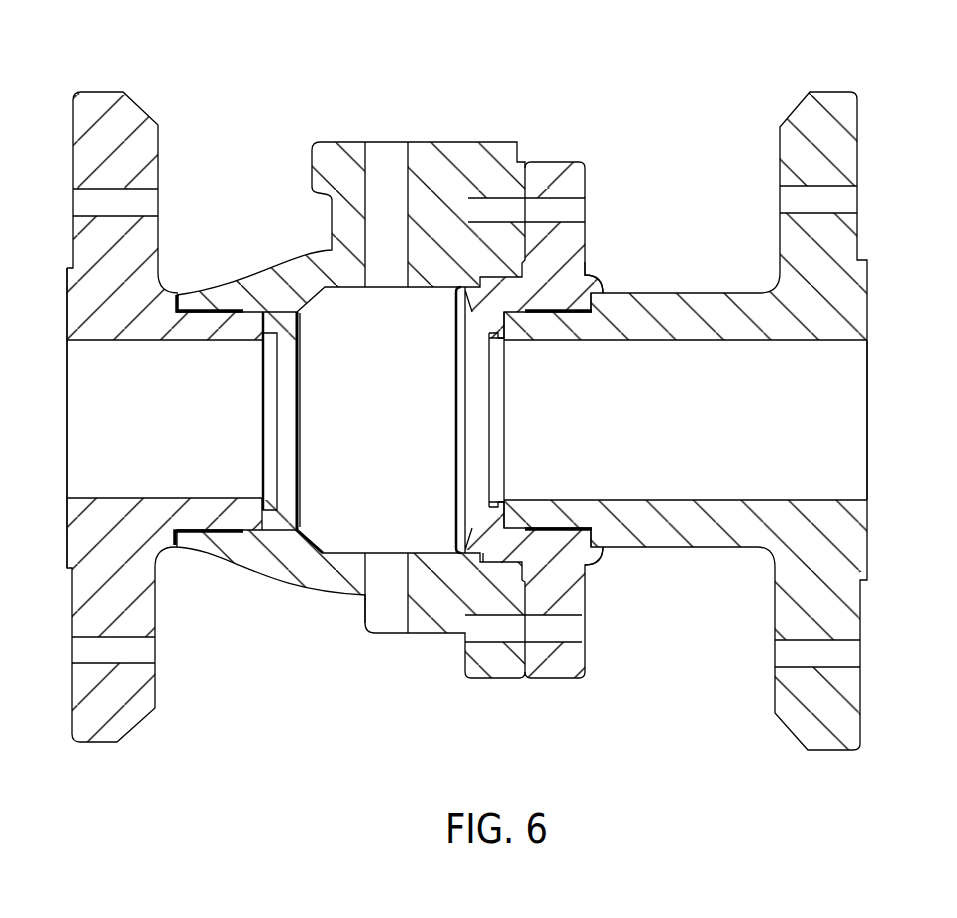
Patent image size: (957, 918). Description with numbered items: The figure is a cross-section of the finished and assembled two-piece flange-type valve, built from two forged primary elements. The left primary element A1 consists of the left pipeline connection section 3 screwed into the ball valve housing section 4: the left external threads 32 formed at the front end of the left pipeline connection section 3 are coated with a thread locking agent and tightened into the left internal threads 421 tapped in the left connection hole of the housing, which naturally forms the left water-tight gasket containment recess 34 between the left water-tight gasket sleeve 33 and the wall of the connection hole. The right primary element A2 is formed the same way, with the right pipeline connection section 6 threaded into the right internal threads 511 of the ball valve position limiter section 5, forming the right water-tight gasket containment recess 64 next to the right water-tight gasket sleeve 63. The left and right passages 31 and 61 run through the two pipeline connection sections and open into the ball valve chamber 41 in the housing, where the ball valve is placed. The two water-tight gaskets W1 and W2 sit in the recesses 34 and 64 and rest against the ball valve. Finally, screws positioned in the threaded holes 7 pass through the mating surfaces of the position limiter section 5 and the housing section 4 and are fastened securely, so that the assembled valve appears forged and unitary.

The left pipeline connection section 3 is at (93, 91).
The ball valve housing section 4 is at (297, 253).
The ball valve position limiter section 5 is at (570, 163).
The right pipeline connection section 6 is at (828, 90).
The threaded holes 7 is at (87, 203).
The left passage 31 is at (100, 445).
The left external threads 32 is at (188, 314).
The left water-tight gasket sleeve 33 is at (267, 509).
The left water-tight gasket containment recess 34 is at (262, 522).
The ball valve chamber 41 is at (588, 308).
The right passage 61 is at (837, 370).
The right water-tight gasket sleeve 63 is at (483, 513).
The right water-tight gasket containment recess 64 is at (496, 492).
The left internal threads 421 is at (222, 308).
The right internal threads 511 is at (585, 275).
The left water-tight gasket W1 is at (277, 523).
The right water-tight gasket W2 is at (552, 604).
The left primary element A1 is at (218, 703).
The right primary element A2 is at (705, 645).